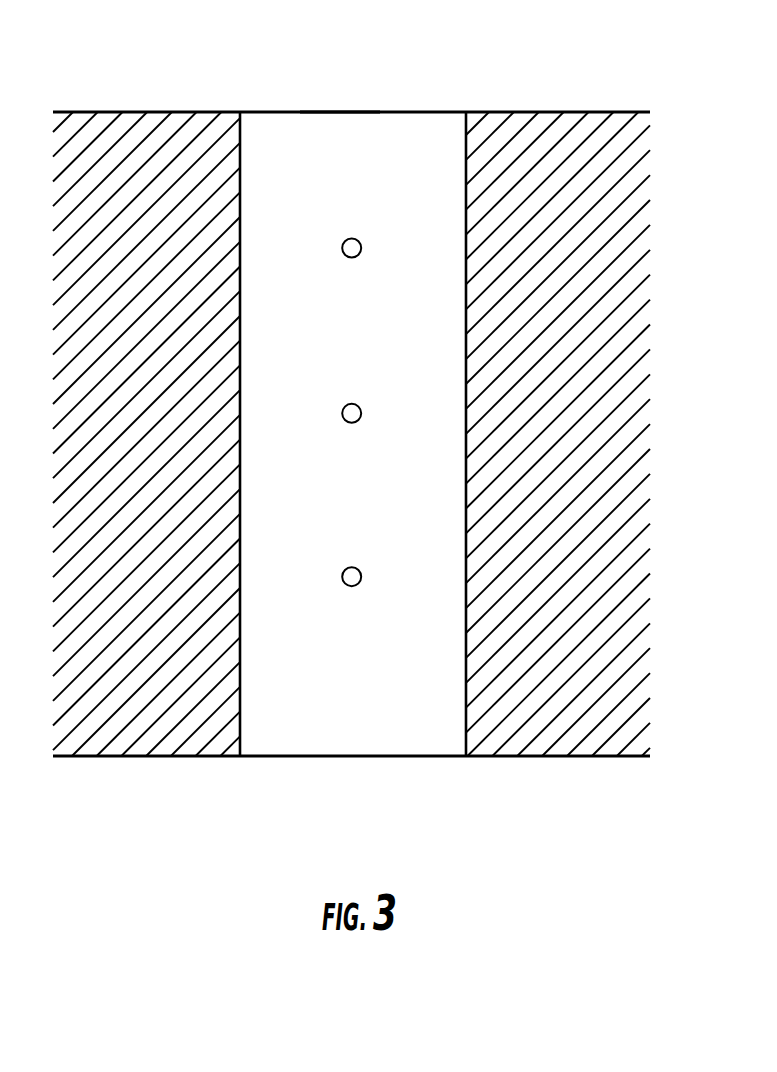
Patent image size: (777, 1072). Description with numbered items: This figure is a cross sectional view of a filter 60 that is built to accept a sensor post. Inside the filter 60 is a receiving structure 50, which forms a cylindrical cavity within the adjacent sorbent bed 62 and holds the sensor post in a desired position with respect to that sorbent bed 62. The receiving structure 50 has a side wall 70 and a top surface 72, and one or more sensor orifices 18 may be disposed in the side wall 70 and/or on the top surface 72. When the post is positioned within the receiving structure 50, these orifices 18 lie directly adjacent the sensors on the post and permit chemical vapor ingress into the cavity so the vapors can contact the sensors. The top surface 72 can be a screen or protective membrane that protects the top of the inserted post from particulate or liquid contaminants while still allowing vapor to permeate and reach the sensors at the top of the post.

The sensor orifices 18 is at (350, 258).
The receiving structure 50 is at (397, 725).
The filter 60 is at (594, 816).
The sorbent bed 62 is at (613, 652).
The side wall 70 is at (382, 120).
The top surface 72 is at (339, 108).